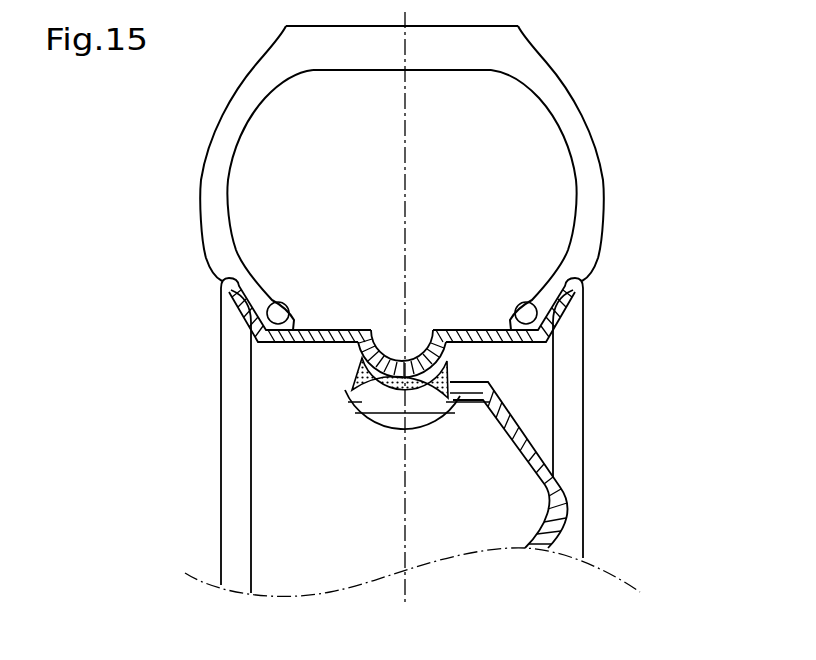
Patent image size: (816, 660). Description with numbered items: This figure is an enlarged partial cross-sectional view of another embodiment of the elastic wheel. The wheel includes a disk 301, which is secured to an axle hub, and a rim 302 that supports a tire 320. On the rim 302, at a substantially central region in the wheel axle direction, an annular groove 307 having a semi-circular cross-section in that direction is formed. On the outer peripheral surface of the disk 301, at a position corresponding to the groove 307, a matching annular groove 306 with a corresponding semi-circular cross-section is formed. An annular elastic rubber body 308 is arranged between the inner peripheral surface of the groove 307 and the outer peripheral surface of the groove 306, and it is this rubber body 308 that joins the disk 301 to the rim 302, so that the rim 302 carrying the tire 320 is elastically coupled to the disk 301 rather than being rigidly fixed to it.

The tire 320 is at (597, 133).
The rim 302 is at (585, 283).
The disk 301 is at (583, 500).
The annular groove 306 is at (377, 425).
The annular groove 307 is at (412, 360).
The annular elastic rubber body 308 is at (357, 378).